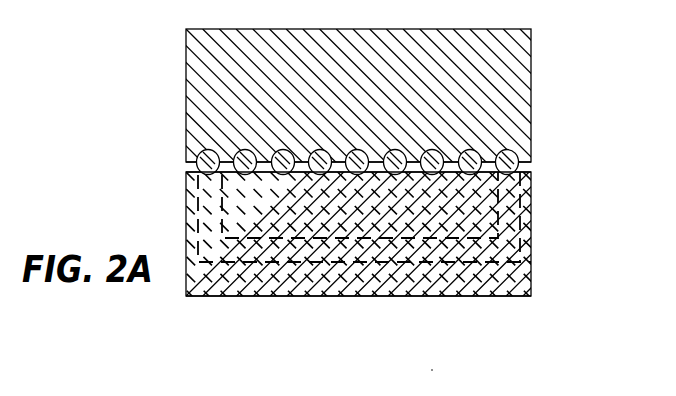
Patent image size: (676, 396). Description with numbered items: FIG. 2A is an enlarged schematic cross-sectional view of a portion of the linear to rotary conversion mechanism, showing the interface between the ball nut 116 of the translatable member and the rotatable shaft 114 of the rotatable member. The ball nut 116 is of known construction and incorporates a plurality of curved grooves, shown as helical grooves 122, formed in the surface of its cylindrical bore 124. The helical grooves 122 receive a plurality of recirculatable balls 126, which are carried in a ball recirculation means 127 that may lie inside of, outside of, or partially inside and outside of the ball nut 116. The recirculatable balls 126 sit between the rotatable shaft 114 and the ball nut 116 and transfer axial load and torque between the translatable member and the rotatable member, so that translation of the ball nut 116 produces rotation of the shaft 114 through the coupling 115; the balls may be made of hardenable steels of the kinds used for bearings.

The rotatable shaft 114 is at (222, 287).
The coupling 115 is at (510, 297).
The ball nut 116 is at (510, 60).
The helical grooves 122 is at (511, 148).
The cylindrical bore 124 is at (418, 152).
The recirculatable balls 126 is at (517, 158).
The ball recirculation means 127 is at (508, 212).